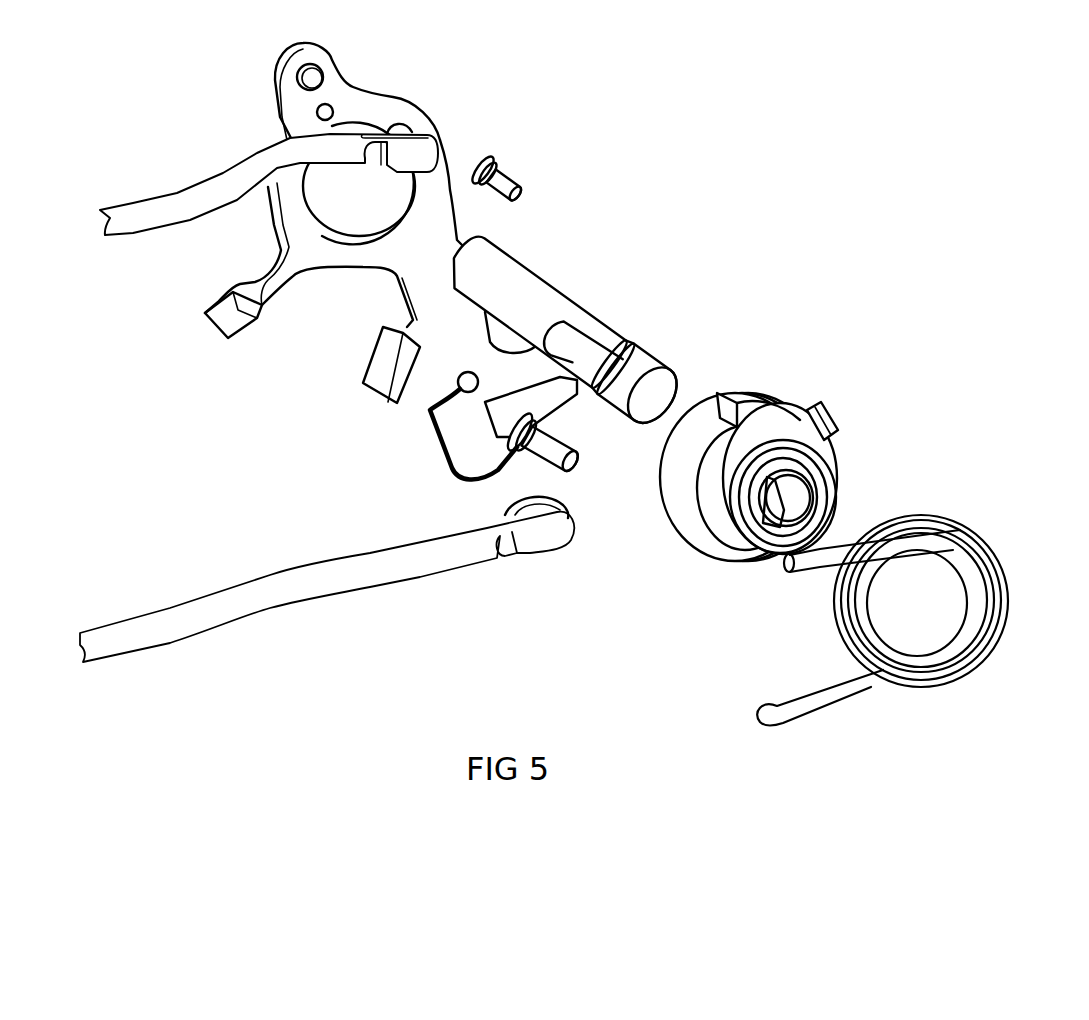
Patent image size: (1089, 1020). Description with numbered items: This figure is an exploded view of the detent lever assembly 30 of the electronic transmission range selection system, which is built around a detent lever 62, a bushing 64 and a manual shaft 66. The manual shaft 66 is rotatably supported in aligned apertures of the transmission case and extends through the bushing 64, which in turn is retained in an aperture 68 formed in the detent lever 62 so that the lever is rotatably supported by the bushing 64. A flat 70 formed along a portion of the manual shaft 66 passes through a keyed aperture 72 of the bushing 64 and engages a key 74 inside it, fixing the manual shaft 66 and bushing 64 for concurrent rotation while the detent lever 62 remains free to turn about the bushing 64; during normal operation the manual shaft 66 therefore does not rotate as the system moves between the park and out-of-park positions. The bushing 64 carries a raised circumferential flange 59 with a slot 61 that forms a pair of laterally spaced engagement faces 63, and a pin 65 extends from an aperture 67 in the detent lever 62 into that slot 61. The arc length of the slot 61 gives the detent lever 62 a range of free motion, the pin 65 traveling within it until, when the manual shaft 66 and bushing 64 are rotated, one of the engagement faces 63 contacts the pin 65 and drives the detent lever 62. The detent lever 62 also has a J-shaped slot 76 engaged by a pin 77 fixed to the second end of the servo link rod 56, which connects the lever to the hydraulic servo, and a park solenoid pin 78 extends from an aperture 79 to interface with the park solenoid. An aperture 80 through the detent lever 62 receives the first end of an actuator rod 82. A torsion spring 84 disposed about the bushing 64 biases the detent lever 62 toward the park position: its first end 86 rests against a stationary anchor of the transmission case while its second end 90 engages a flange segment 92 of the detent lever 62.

The detent lever assembly 30 is at (777, 208).
The servo link rod 56 is at (293, 600).
The raised circumferential flange 59 is at (823, 433).
The slot 61 is at (795, 395).
The detent lever 62 is at (432, 108).
The engagement faces 63 is at (800, 418).
The bushing 64 is at (712, 490).
The pin 65 is at (514, 167).
The manual shaft 66 is at (547, 287).
The aperture 67 is at (330, 104).
The aperture 68 is at (322, 207).
The flat 70 is at (590, 357).
The keyed aperture 72 is at (800, 505).
The key 74 is at (778, 528).
The J-shaped slot 76 is at (490, 423).
The pin 77 is at (510, 497).
The park solenoid pin 78 is at (580, 452).
The aperture 79 is at (422, 415).
The aperture 80 is at (320, 73).
The actuator rod 82 is at (134, 206).
The torsion spring 84 is at (953, 527).
The first end 86 is at (803, 573).
The second end 90 is at (760, 720).
The flange segment 92 is at (377, 375).